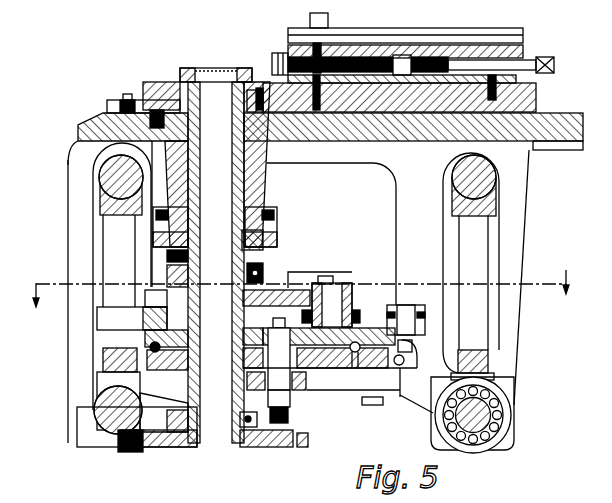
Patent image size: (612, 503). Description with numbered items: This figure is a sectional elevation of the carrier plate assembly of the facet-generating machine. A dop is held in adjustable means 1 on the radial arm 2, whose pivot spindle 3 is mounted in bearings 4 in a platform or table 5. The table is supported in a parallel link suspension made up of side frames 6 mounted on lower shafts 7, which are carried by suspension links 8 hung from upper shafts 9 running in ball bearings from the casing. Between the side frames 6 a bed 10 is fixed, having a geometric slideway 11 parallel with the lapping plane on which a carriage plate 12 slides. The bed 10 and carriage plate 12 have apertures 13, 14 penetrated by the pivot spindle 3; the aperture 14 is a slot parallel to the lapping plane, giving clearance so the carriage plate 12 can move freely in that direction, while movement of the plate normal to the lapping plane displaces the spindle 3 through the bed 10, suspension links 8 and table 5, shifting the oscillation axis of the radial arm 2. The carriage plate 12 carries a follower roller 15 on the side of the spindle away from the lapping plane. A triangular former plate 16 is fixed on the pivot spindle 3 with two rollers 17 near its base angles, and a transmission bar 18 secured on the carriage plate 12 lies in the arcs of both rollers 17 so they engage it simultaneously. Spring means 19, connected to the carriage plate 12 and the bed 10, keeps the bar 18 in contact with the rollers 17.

The adjustable means 1 is at (376, 60).
The radial arm 2 is at (409, 86).
The pivot spindle 3 is at (242, 172).
The bearings 4 is at (268, 150).
The platform or table 5 is at (352, 130).
The side frames 6 is at (397, 183).
The lower shafts 7 is at (97, 405).
The suspension links 8 is at (115, 232).
The upper shafts 9 is at (108, 178).
The bed 10 is at (337, 365).
The geometric slideway 11 is at (355, 368).
The carriage plate 12 is at (366, 333).
The aperture 13 is at (240, 360).
The aperture 14 is at (240, 332).
The follower roller 15 is at (419, 308).
The triangular former plate 16 is at (285, 288).
The rollers 17 is at (143, 317).
The bar 18 is at (295, 312).
The spring means 19 is at (400, 366).